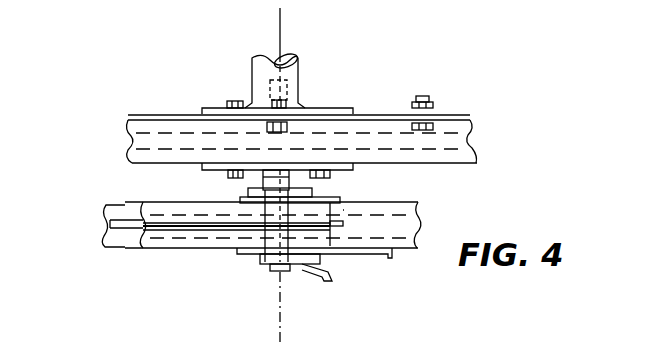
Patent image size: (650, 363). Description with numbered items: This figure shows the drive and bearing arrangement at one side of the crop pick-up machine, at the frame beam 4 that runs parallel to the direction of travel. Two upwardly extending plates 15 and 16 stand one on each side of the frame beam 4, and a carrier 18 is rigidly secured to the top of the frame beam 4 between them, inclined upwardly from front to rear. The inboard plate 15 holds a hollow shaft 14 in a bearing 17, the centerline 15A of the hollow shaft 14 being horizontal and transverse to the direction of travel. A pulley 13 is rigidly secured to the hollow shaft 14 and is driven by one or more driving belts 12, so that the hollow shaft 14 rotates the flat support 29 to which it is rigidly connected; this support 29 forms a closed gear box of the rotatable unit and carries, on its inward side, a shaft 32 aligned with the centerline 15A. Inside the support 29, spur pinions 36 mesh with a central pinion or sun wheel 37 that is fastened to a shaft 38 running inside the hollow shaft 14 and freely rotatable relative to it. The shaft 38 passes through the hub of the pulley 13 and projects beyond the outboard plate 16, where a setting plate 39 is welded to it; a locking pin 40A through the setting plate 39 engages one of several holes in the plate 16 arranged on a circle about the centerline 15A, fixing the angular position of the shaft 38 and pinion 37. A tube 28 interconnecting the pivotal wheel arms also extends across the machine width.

The frame beam 4 is at (102, 208).
The driving belts 12 is at (120, 223).
The pulley 13 is at (338, 232).
The hollow shaft 14 is at (320, 180).
The plate 15 is at (418, 195).
The centerline 15A is at (281, 332).
The plate 16 is at (382, 258).
The bearing 17 is at (314, 192).
The carrier 18 is at (410, 218).
The tube 28 is at (253, 182).
The flat support 29 is at (145, 161).
The shaft 32 is at (296, 73).
The spur pinion 36 is at (125, 146).
The central pinion or sun wheel 37 is at (219, 130).
The shaft 38 is at (272, 271).
The setting plate 39 is at (262, 260).
The locking pin 40A is at (330, 281).